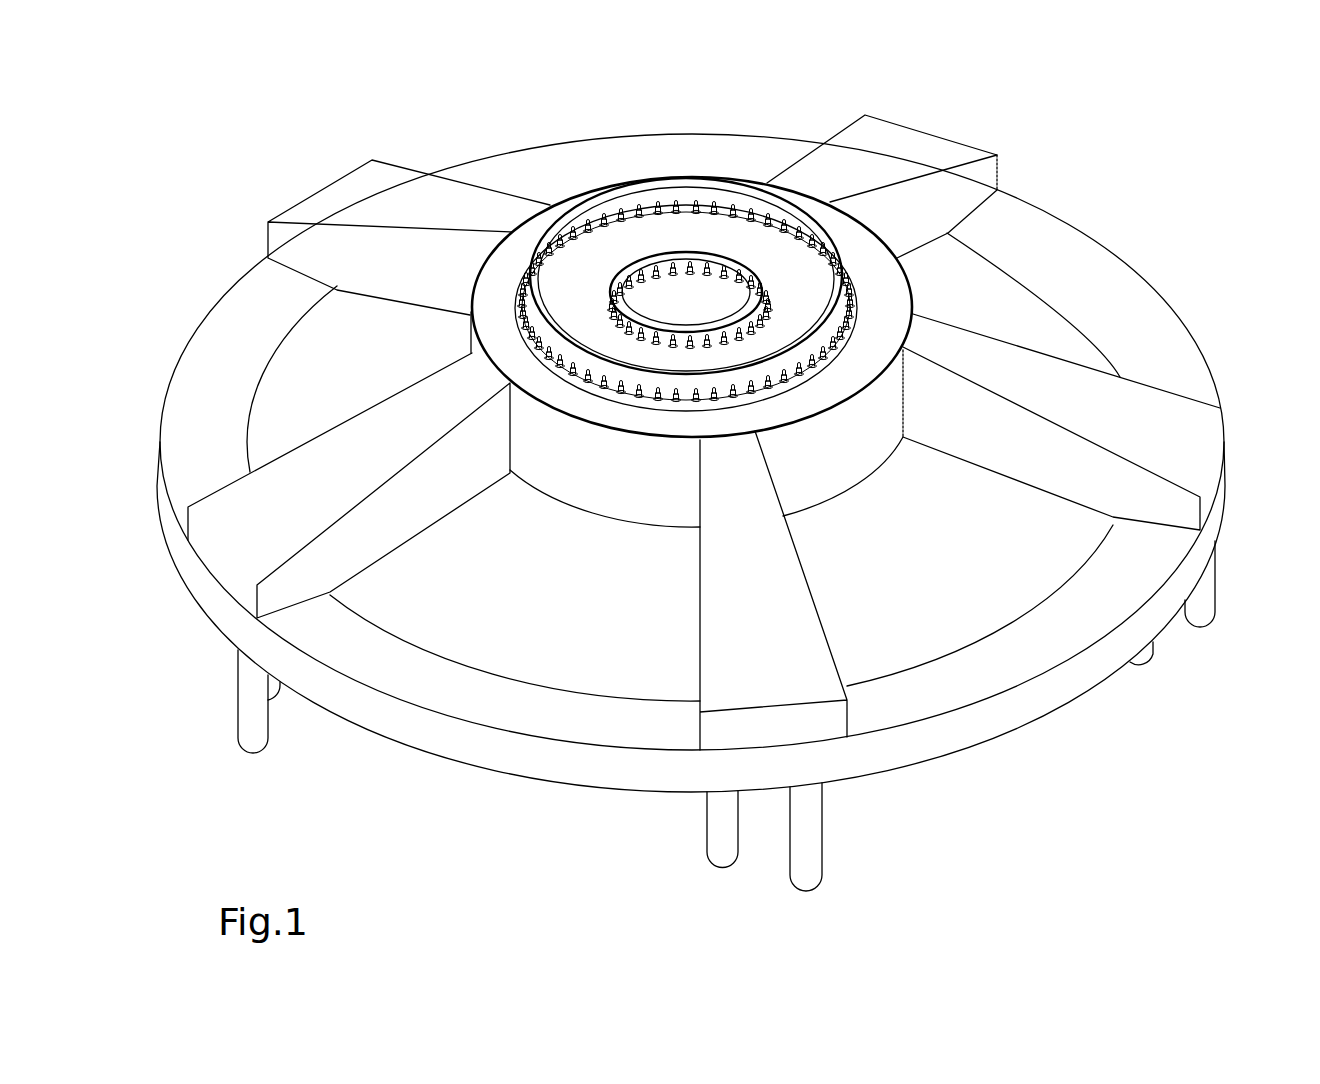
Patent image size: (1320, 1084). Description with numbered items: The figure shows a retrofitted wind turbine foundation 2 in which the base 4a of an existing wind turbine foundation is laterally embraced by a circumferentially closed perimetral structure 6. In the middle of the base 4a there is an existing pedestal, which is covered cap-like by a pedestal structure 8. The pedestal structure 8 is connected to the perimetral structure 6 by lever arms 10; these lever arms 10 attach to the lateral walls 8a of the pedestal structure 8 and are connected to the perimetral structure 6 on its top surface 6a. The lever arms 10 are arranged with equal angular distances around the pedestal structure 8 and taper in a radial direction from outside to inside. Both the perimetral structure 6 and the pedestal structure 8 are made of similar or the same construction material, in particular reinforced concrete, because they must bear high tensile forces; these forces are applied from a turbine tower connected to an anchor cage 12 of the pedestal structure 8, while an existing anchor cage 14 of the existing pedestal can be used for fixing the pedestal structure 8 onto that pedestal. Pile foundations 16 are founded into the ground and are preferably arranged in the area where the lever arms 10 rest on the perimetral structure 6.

The retrofitted wind turbine foundation 2 is at (1172, 120).
The base 4a is at (325, 368).
The perimetral structure 6 is at (1085, 265).
The top surface 6a is at (1168, 345).
The pedestal structure 8 is at (845, 460).
The lateral walls 8a is at (590, 480).
The lever arms 10 is at (345, 190).
The anchor cage 12 is at (730, 190).
The existing anchor cage 14 is at (648, 268).
The pile foundations 16 is at (252, 717).